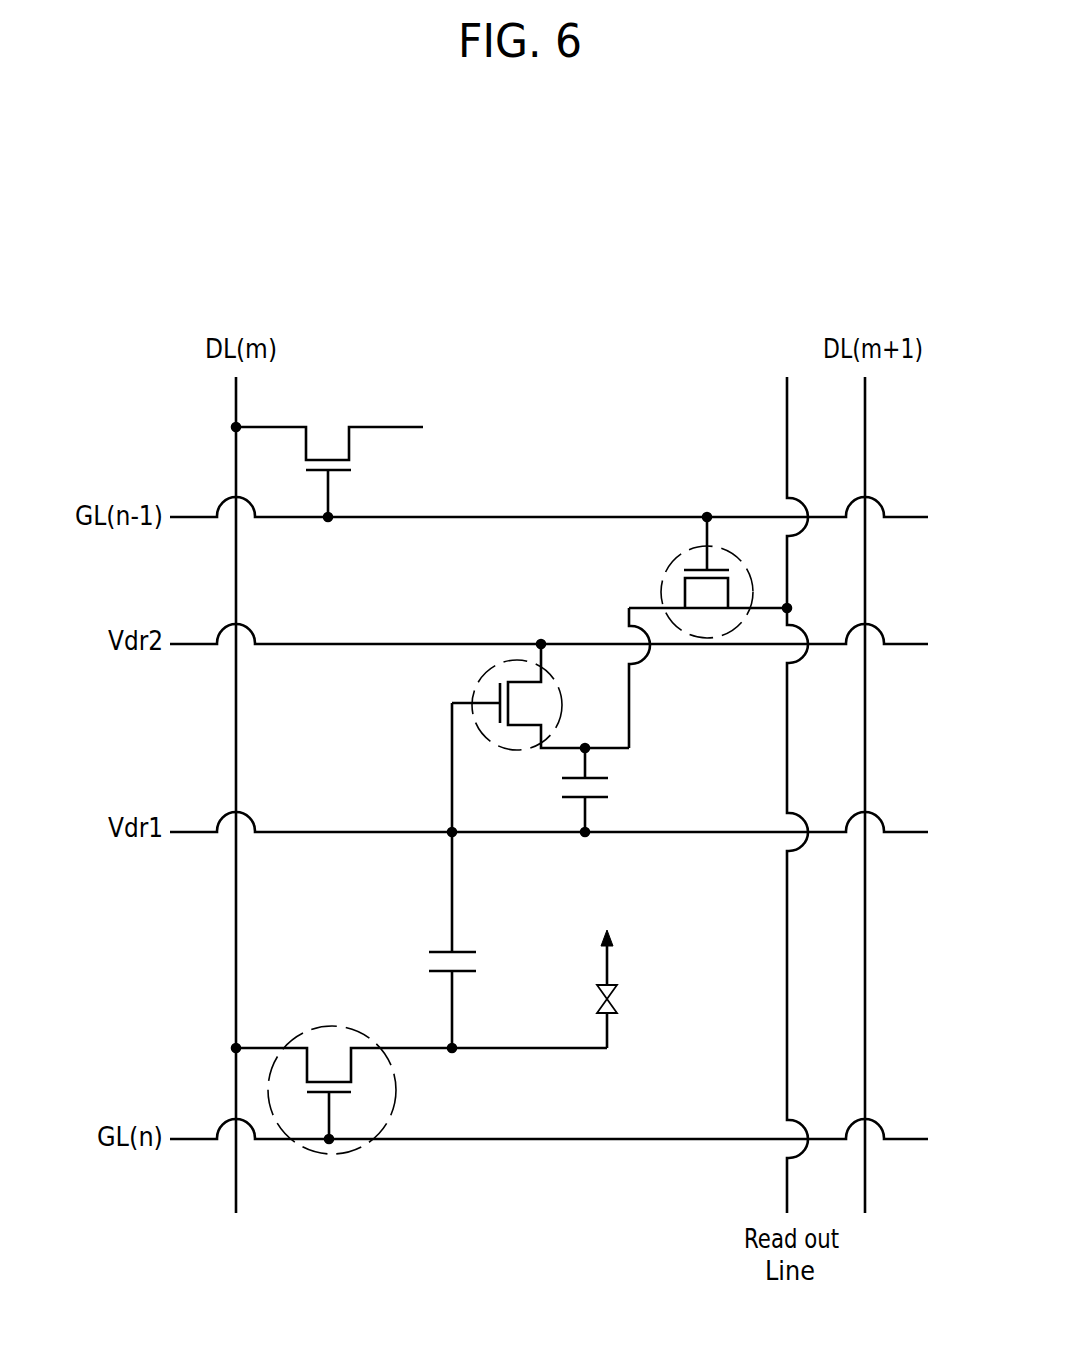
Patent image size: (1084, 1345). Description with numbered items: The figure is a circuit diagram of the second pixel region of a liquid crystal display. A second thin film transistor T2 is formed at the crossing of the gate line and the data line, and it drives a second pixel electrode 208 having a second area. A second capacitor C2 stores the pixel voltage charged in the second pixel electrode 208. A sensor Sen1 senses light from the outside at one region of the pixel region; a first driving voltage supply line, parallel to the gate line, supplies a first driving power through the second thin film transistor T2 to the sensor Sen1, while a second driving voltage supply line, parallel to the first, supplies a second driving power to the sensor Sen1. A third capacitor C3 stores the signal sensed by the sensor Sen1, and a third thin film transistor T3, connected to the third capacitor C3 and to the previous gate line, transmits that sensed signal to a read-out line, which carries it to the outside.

The third thin film transistor T3 is at (660, 570).
The sensor Sen1 is at (468, 690).
The third capacitor C3 is at (605, 790).
The second capacitor C2 is at (471, 942).
The second thin film transistor T2 is at (334, 1156).
The second pixel electrode 208 is at (621, 1004).